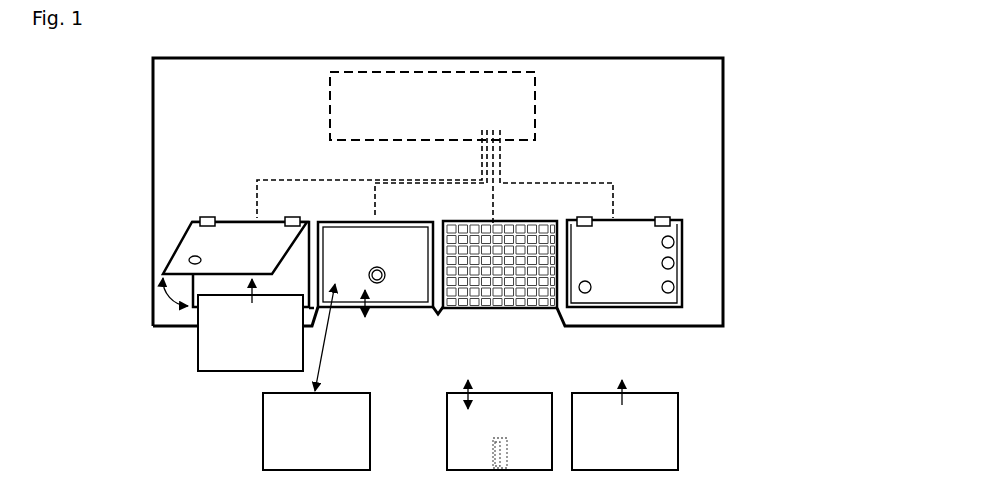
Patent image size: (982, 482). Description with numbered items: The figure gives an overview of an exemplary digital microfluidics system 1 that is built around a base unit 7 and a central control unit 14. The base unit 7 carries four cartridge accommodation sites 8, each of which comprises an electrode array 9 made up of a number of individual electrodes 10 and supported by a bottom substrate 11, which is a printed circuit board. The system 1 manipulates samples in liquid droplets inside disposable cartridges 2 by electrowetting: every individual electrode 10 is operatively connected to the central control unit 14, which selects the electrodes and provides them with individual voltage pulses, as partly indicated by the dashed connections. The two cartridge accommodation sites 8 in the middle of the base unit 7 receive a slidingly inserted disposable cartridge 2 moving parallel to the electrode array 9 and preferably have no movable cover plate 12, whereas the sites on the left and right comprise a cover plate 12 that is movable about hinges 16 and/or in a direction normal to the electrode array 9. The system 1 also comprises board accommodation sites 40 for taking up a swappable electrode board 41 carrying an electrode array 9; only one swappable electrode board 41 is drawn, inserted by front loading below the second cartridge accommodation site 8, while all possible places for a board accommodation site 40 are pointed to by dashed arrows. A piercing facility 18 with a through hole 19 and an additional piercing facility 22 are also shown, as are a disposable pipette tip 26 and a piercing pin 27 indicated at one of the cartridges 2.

The digital microfluidics system 1 is at (752, 111).
The disposable cartridge 2 is at (415, 262).
The base unit 7 is at (182, 160).
The cartridge accommodation site 8 is at (290, 292).
The electrode array 9 is at (464, 314).
The individual electrode 10 is at (495, 288).
The bottom substrate 11 is at (553, 308).
The cover plate 12 is at (249, 267).
The central control unit 14 is at (474, 108).
The hinge 16 is at (203, 219).
The piercing facility 18 is at (182, 256).
The through hole 19 is at (378, 284).
The additional piercing facility 22 is at (668, 298).
The disposable pipette tip 26 is at (505, 441).
The piercing pin 27 is at (498, 456).
The board accommodation site 40 is at (206, 286).
The swappable electrode board 41 is at (335, 448).